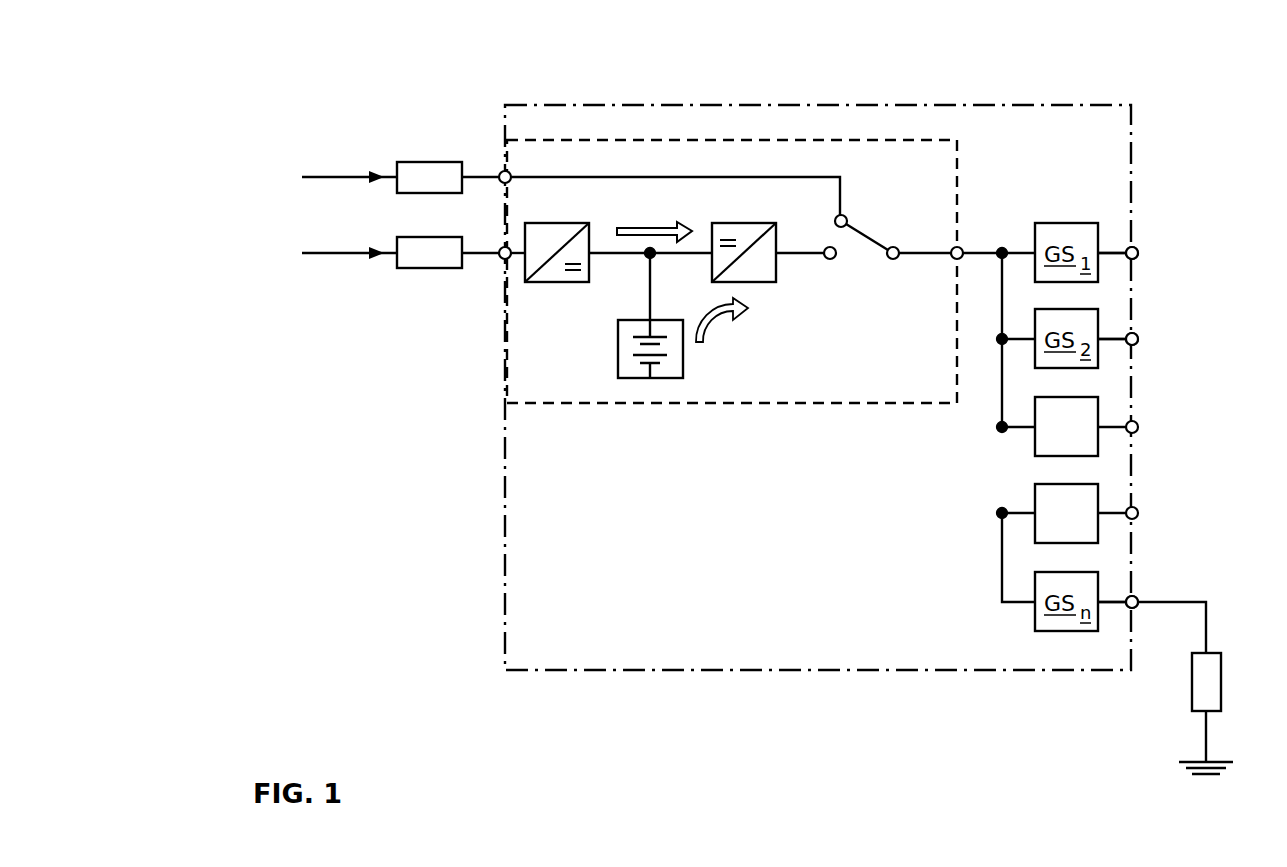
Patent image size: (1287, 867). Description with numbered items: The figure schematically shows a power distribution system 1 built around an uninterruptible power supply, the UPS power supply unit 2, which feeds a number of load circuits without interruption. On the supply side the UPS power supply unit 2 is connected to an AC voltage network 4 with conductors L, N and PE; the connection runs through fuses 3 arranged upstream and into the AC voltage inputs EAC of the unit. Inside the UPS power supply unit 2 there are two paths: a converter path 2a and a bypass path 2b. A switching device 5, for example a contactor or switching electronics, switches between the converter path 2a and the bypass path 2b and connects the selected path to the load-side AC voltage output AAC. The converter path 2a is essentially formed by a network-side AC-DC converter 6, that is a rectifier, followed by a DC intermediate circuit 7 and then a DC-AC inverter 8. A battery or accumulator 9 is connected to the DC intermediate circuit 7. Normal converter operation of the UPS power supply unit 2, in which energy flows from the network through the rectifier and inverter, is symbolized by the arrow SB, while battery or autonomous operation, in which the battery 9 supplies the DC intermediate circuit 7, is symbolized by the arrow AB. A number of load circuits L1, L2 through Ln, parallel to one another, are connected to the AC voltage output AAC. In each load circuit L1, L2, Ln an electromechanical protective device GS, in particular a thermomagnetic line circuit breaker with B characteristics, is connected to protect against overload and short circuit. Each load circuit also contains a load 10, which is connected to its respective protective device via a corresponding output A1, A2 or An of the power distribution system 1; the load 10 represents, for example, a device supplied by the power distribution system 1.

The power distribution system 1 is at (975, 105).
The UPS power supply unit 2 is at (738, 140).
The converter path 2a is at (832, 259).
The bypass path 2b is at (583, 177).
The fuse 3 is at (430, 162).
The AC voltage network 4 is at (288, 203).
The switching device 5 is at (882, 218).
The AC-DC converter 6 is at (561, 282).
The DC intermediate circuit 7 is at (625, 256).
The DC-AC inverter 8 is at (763, 283).
The battery 9 is at (638, 378).
The load 10 is at (1221, 680).
The converter operation arrow SB is at (648, 222).
The battery operation arrow AB is at (708, 332).
The AC voltage input EAC is at (498, 171).
The AC voltage output AAC is at (960, 248).
The load circuit L1 is at (1113, 250).
The load circuit L2 is at (1113, 336).
The load circuit Ln is at (1113, 600).
The output A1 is at (1137, 250).
The output A2 is at (1137, 336).
The output An is at (1137, 600).